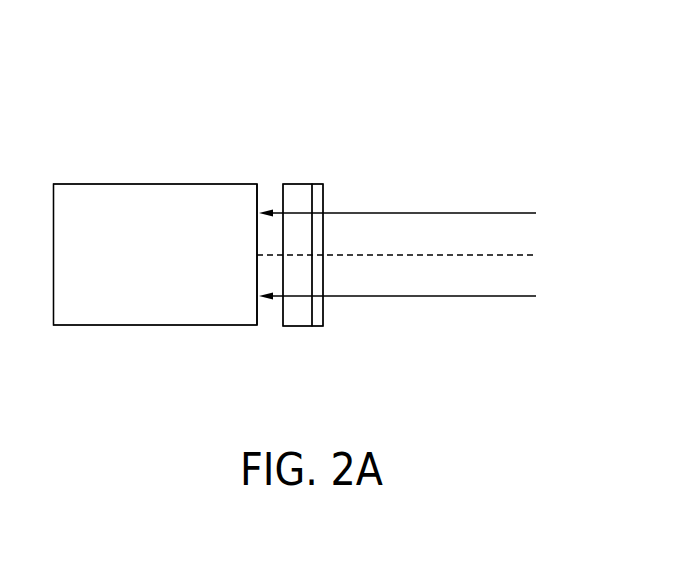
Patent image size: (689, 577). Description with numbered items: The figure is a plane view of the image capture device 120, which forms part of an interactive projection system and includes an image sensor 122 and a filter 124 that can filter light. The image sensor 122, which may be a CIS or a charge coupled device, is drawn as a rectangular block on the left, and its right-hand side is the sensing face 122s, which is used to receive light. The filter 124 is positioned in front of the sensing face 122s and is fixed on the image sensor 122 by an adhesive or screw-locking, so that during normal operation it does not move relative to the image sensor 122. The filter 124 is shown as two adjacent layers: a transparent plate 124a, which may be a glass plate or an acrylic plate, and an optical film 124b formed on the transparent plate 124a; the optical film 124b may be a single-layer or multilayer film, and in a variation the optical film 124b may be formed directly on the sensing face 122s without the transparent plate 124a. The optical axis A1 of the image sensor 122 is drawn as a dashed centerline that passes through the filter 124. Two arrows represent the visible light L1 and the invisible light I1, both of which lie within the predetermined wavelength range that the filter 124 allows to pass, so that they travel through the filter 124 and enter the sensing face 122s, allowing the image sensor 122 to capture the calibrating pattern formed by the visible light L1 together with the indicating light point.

The image capture device 120 is at (222, 104).
The image sensor 122 is at (184, 190).
The sensing face 122s is at (257, 265).
The filter 124 is at (373, 104).
The transparent plate 124a is at (296, 195).
The optical film 124b is at (318, 200).
The visible light L1 is at (463, 212).
The invisible light I1 is at (462, 297).
The optical axis A1 is at (505, 255).